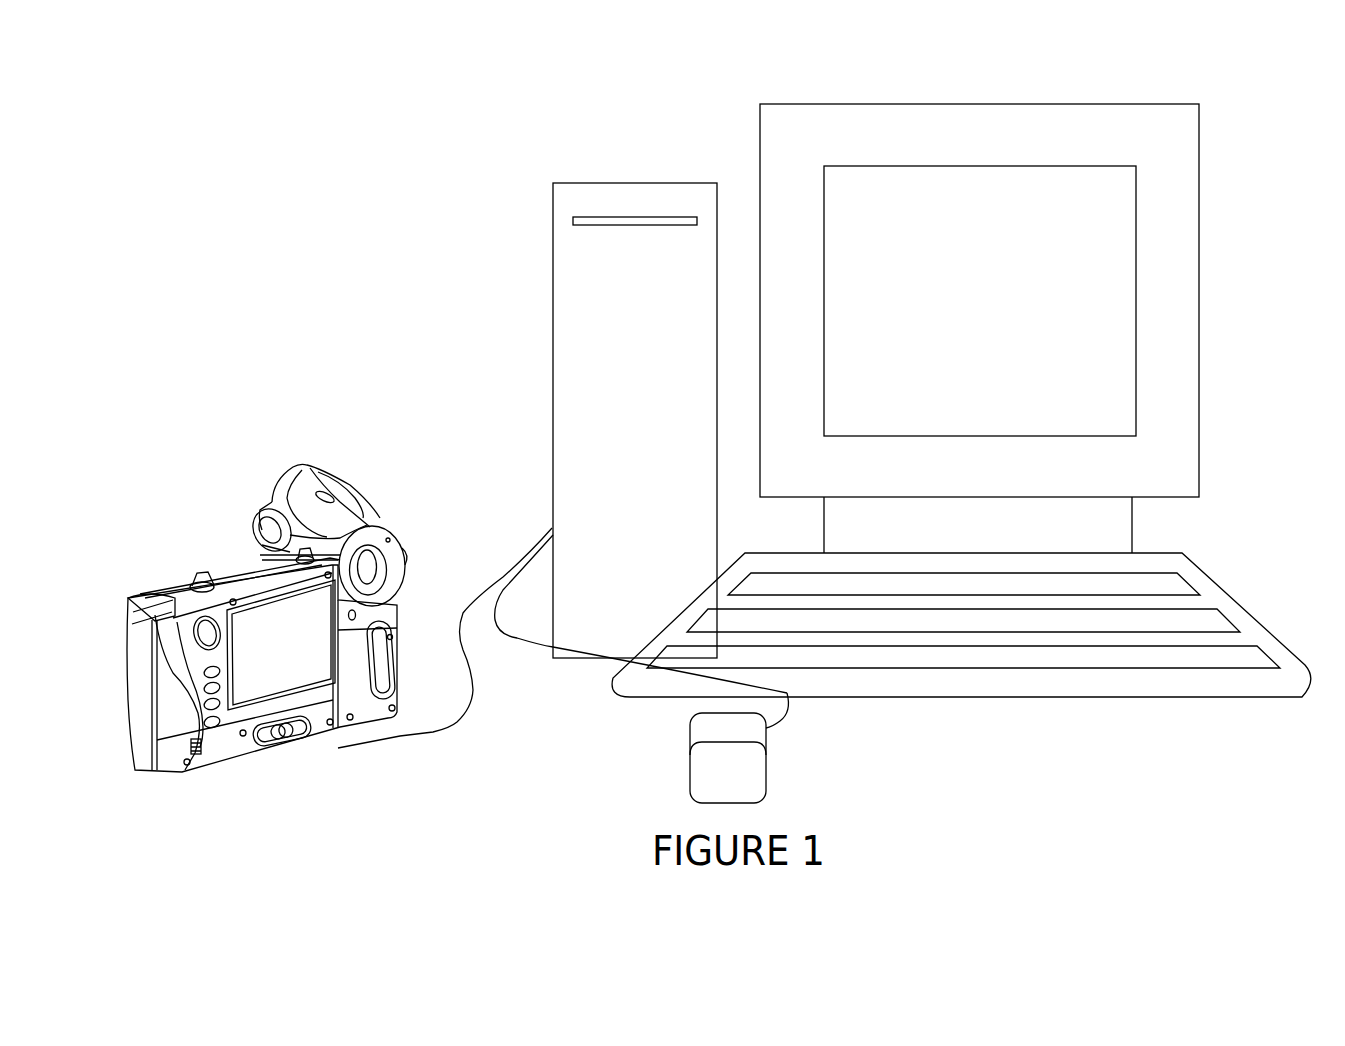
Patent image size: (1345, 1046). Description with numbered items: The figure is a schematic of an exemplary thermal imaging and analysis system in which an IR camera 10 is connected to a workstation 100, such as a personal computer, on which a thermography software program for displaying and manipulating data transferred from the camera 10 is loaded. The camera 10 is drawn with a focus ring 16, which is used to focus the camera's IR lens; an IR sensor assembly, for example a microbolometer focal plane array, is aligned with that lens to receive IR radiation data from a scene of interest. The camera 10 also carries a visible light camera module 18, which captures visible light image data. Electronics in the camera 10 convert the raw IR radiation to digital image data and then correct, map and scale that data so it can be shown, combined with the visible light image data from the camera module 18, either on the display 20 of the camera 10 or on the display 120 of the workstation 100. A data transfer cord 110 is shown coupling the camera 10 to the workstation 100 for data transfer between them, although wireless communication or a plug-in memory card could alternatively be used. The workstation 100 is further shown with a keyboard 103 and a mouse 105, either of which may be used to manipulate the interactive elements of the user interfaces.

The IR camera 10 is at (267, 592).
The focus ring 16 is at (257, 541).
The visible light camera module 18 is at (292, 465).
The display 20 is at (268, 640).
The workstation 100 is at (932, 420).
The keyboard 103 is at (1236, 689).
The mouse 105 is at (745, 772).
The data transfer cord 110 is at (421, 735).
The display 120 is at (1083, 285).